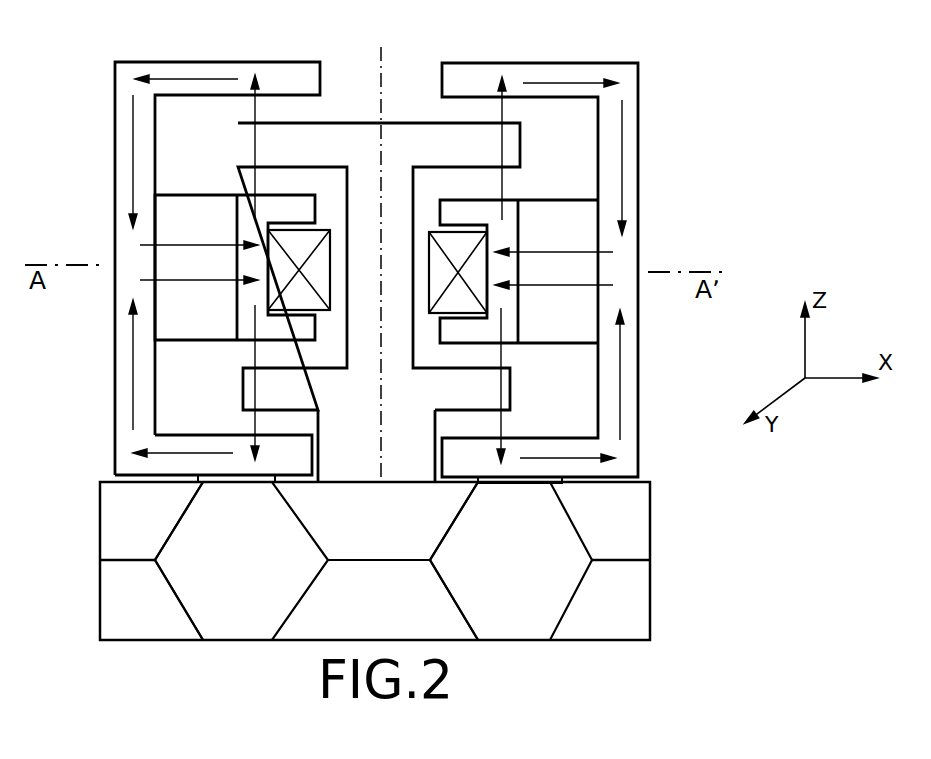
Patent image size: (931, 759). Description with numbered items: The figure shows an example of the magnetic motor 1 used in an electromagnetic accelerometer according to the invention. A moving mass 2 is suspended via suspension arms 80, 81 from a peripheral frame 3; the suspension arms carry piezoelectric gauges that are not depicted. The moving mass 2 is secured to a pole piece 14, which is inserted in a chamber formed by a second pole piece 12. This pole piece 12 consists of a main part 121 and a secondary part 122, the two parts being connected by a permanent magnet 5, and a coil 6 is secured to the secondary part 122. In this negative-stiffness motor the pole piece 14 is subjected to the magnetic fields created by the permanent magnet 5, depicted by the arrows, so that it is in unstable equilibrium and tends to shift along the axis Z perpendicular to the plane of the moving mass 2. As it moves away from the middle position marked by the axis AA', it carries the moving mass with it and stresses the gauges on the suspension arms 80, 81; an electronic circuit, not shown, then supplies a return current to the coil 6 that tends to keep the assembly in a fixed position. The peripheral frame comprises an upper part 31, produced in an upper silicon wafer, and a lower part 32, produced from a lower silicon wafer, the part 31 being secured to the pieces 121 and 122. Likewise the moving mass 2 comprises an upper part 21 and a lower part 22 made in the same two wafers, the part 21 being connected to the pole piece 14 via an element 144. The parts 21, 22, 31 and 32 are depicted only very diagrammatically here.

The magnetic motor 1 is at (620, 377).
The pole piece 12 is at (125, 147).
The main part 121 is at (140, 410).
The secondary part 122 is at (272, 325).
The pole piece 14 is at (510, 142).
The element 144 is at (410, 470).
The permanent magnet 5 is at (188, 217).
The coil 6 is at (313, 238).
The suspension arm 80 is at (238, 483).
The suspension arm 81 is at (517, 480).
The moving mass 2 is at (333, 523).
The upper part 21 is at (428, 538).
The lower part 22 is at (447, 623).
The peripheral frame 3 is at (122, 528).
The upper part 31 is at (153, 535).
The lower part 32 is at (175, 615).